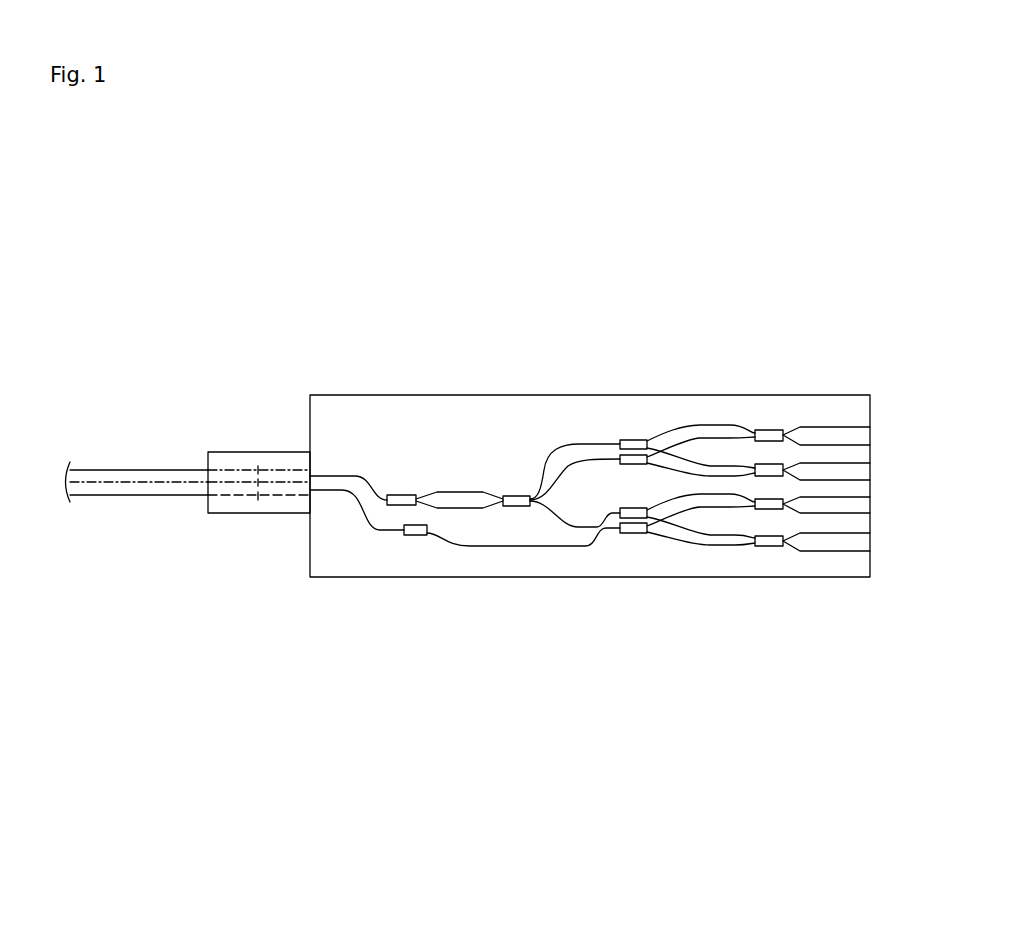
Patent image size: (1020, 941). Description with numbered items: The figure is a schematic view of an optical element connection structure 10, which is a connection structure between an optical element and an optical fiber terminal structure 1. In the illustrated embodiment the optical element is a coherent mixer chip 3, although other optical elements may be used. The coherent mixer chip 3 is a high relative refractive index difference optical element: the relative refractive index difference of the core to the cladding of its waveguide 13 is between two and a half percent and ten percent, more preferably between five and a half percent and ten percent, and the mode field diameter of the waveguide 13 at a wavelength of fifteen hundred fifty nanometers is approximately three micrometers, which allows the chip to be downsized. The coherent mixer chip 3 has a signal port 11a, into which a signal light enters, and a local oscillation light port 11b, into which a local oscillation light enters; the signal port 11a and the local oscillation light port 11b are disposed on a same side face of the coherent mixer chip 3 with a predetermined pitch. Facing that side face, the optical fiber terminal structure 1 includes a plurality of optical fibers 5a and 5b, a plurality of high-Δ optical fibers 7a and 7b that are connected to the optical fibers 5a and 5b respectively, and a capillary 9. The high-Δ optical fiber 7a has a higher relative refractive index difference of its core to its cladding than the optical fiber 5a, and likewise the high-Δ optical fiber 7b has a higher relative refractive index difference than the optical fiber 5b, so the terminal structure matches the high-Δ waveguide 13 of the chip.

The optical fiber terminal structure 1 is at (158, 256).
The optical element connection structure 10 is at (613, 256).
The coherent mixer chip 3 is at (581, 395).
The waveguide 13 is at (447, 492).
The optical fiber 5a is at (116, 470).
The optical fiber 5b is at (112, 497).
The high-Δ optical fiber 7a is at (279, 472).
The high-Δ optical fiber 7b is at (281, 494).
The capillary 9 is at (222, 505).
The signal port 11a is at (311, 490).
The local oscillation light port 11b is at (311, 477).